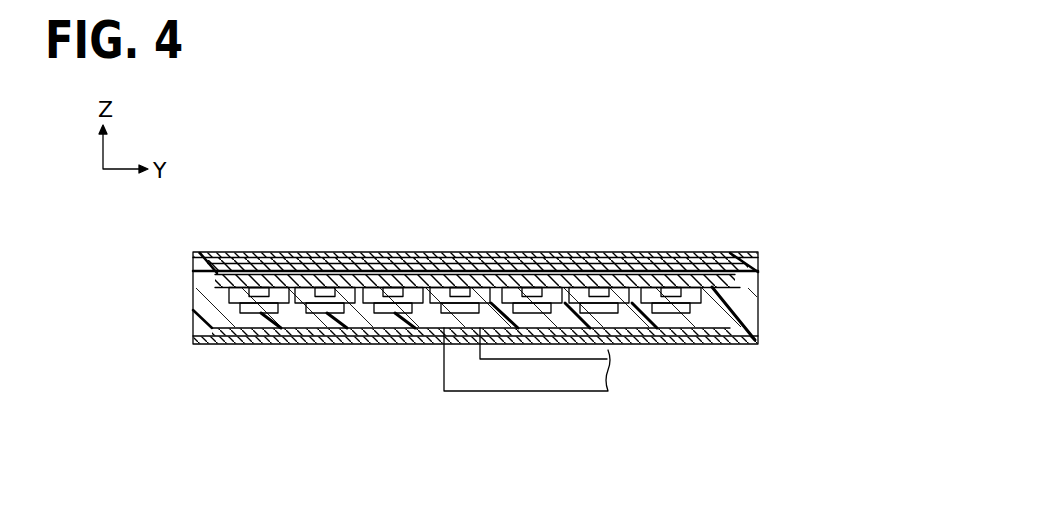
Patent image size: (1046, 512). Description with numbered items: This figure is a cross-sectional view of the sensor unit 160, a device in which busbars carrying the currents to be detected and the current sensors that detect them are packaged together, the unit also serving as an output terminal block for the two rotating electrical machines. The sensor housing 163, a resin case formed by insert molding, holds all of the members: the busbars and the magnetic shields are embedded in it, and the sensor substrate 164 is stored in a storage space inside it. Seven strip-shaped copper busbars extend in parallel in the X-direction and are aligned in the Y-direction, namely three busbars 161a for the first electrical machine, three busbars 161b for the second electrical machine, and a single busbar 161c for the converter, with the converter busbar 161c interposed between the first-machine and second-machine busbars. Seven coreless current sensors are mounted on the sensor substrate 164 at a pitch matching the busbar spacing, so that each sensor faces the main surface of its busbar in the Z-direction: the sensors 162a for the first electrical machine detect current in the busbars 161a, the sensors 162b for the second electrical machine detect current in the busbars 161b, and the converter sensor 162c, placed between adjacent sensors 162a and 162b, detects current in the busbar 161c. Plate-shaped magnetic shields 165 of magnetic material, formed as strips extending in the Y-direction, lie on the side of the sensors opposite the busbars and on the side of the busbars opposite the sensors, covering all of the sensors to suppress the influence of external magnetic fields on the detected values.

The sensor unit 160 is at (725, 246).
The busbar for the first electrical machine 161a is at (269, 316).
The busbar for the second electrical machine 161b is at (538, 308).
The busbar for the converter 161c is at (443, 391).
The sensor for the first electrical machine 162a is at (258, 296).
The sensor for the second electrical machine 162b is at (531, 296).
The converter sensor 162c is at (459, 296).
The sensor housing 163 is at (758, 282).
The sensor substrate 164 is at (730, 283).
The magnetic shield 165 is at (758, 256).